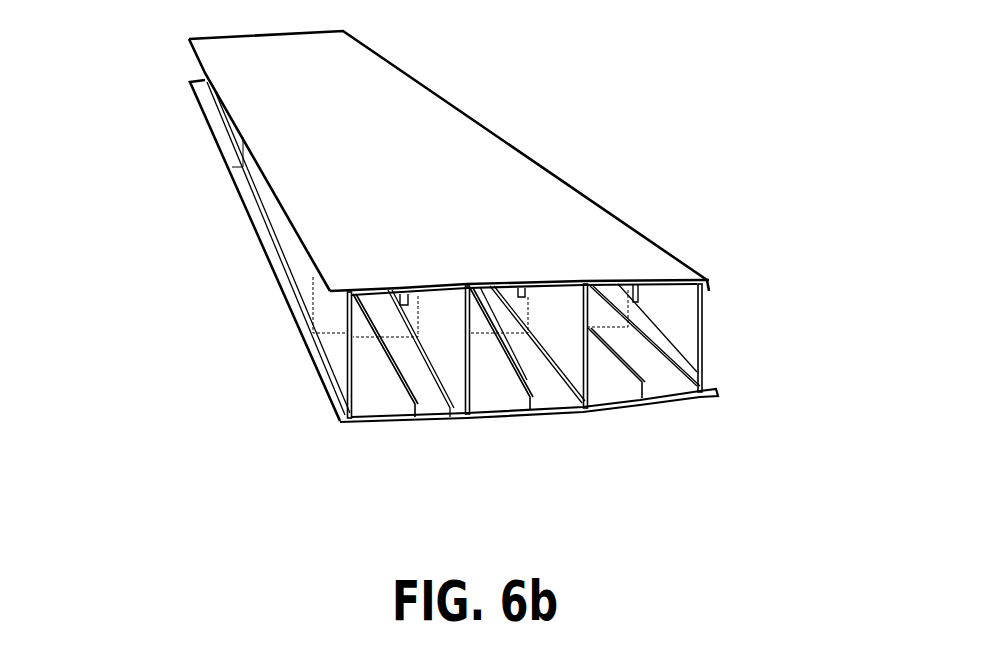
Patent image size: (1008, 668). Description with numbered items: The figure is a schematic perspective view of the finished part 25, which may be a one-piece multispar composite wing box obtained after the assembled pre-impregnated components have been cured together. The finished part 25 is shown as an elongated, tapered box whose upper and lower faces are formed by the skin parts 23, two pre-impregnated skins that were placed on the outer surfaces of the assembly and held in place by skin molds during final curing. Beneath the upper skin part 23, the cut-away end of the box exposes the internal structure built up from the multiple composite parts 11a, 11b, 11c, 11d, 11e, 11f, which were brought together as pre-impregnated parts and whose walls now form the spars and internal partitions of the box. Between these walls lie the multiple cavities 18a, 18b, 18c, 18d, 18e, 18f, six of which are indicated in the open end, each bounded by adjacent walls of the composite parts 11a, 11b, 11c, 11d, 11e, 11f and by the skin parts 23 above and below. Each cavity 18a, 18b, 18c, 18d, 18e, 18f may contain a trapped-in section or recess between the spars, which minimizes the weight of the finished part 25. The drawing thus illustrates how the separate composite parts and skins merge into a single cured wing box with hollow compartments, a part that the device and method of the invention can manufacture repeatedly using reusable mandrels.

The finished part 25 is at (567, 140).
The skin part 23 is at (622, 245).
The composite part 11a is at (372, 408).
The composite part 11b is at (444, 405).
The composite part 11c is at (503, 403).
The composite part 11d is at (568, 400).
The composite part 11e is at (648, 405).
The composite part 11f is at (678, 308).
The cavity 18a is at (368, 392).
The cavity 18b is at (417, 377).
The cavity 18c is at (485, 375).
The cavity 18d is at (525, 357).
The cavity 18e is at (612, 378).
The cavity 18f is at (645, 362).